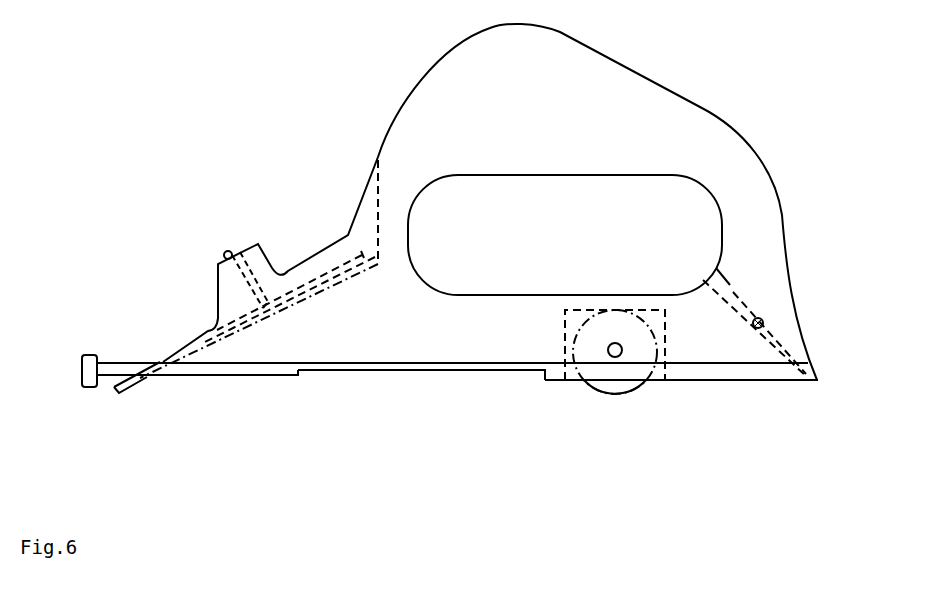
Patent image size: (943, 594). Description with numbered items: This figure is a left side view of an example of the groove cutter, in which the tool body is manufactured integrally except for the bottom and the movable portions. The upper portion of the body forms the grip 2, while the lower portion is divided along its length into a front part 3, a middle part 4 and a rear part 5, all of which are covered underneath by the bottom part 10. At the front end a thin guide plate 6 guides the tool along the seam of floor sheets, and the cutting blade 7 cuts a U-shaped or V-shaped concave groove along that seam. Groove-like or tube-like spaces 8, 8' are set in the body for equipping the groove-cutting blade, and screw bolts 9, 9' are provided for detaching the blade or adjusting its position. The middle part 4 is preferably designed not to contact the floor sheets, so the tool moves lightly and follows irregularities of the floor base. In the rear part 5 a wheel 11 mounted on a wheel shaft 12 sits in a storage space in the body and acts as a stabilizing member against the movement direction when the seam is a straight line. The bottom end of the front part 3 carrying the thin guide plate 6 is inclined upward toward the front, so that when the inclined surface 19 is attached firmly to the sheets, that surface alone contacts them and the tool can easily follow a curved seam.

The grip 2 is at (490, 202).
The front part 3 is at (447, 413).
The middle part 4 is at (421, 422).
The rear part 5 is at (682, 431).
The thin guide plate 6 is at (108, 406).
The cutting blade 7 is at (258, 316).
The groove-like or tube-like space 8 is at (265, 249).
The groove-like or tube-like space 8' is at (767, 287).
The screw bolt 9 is at (246, 237).
The screw bolt 9' is at (798, 294).
The bottom part 10 is at (400, 390).
The wheel 11 is at (631, 366).
The wheel shaft 12 is at (557, 335).
The inclined surface 19 is at (63, 357).